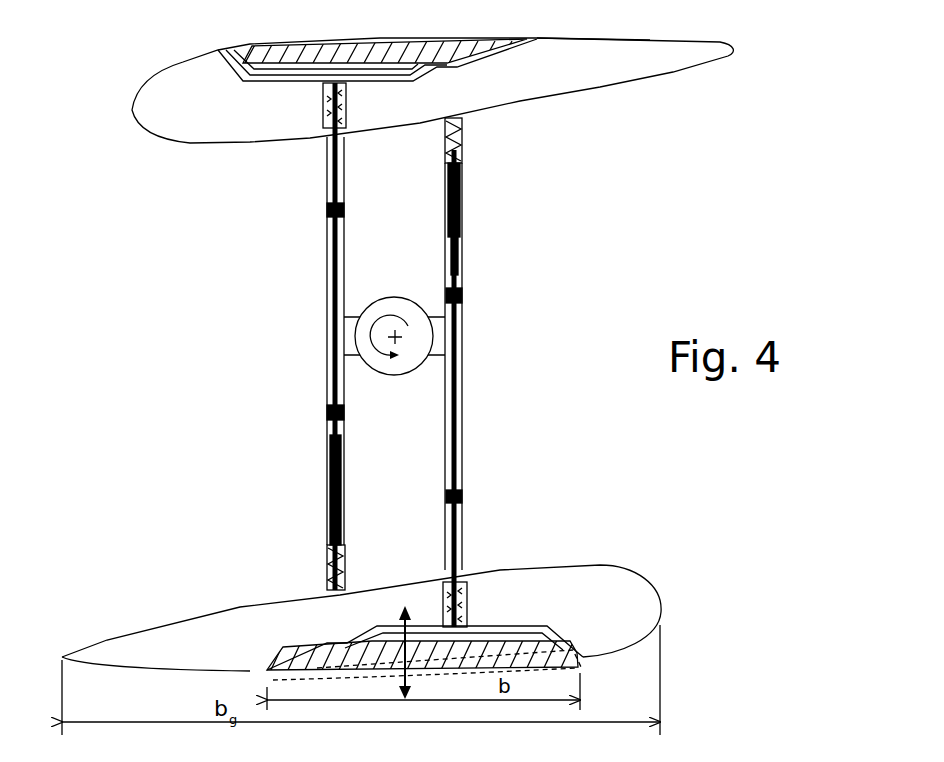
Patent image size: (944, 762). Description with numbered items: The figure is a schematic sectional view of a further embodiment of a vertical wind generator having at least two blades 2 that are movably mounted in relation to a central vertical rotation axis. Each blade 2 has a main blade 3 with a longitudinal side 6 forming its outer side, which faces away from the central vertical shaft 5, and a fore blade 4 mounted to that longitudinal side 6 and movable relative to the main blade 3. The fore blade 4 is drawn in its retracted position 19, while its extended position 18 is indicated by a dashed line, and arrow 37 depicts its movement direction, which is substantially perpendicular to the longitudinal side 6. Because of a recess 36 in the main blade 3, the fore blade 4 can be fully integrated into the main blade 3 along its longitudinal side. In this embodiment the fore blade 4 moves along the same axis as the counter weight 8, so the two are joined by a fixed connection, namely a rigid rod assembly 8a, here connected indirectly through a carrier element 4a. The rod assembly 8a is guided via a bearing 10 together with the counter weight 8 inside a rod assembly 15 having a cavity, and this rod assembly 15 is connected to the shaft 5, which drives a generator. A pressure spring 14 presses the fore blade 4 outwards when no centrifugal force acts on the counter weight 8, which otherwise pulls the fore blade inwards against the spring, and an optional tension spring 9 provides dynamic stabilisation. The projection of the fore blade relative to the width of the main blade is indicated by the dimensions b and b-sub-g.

The blade 2 is at (662, 524).
The main blade 3 is at (157, 93).
The fore blade 4 is at (218, 50).
The carrier element 4a is at (510, 632).
The central vertical shaft 5 is at (393, 336).
The longitudinal side 6 is at (232, 663).
The counter weight 8 is at (463, 205).
The rod assembly 8a is at (453, 387).
The tension spring 9 is at (333, 568).
The bearing 10 is at (328, 216).
The pressure spring 14 is at (327, 107).
The rod assembly having a cavity 15 is at (338, 283).
The extended position 18 is at (584, 668).
The retracted position 19 is at (527, 53).
The recess 36 is at (233, 72).
The arrow 37 is at (412, 607).